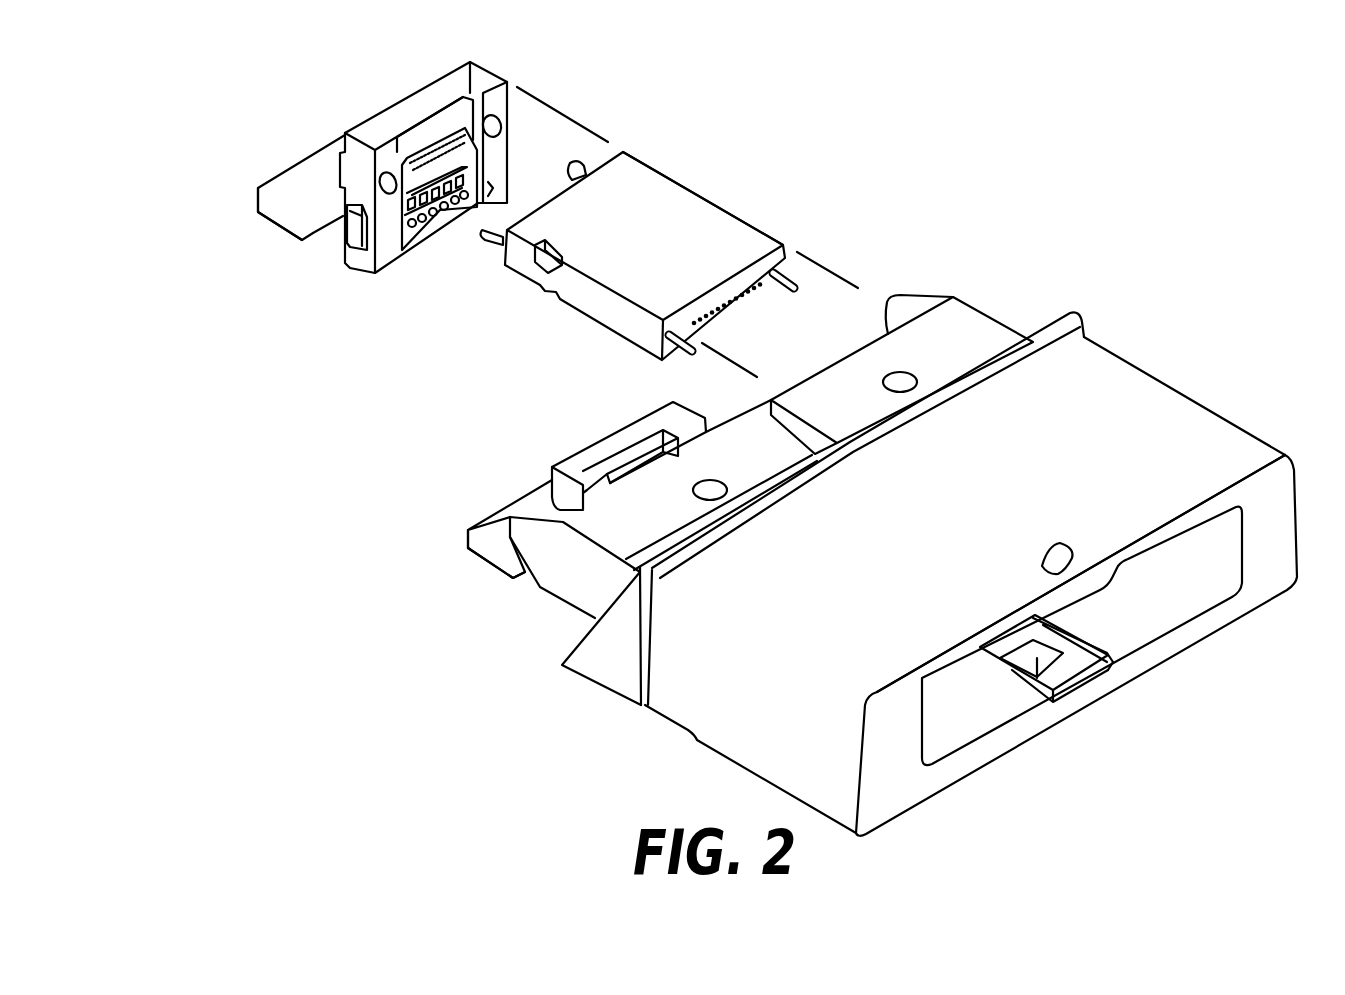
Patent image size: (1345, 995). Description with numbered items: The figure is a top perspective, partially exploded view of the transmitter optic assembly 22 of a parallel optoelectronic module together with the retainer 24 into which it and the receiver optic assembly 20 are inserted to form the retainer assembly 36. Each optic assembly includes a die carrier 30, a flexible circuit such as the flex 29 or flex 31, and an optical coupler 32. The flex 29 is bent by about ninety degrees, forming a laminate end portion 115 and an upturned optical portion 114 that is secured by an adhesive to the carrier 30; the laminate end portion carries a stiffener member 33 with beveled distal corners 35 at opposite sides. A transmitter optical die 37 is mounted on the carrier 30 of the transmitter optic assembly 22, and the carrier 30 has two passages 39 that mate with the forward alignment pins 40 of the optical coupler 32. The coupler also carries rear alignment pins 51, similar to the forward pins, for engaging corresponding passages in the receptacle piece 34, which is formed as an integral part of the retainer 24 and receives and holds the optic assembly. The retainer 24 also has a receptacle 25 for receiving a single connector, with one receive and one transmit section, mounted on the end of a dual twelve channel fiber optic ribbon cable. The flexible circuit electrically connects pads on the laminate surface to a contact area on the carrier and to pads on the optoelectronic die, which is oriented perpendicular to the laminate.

The receiver optic assembly 20 is at (485, 486).
The transmitter optic assembly 22 is at (752, 180).
The retainer 24 is at (934, 532).
The receptacle 25 is at (1148, 600).
The flex 29 is at (248, 188).
The die carrier 30 is at (473, 75).
The flex 31 is at (467, 517).
The optical coupler 32 is at (642, 183).
The stiffener member 33 is at (496, 560).
The receptacle piece 34 is at (964, 354).
The beveled distal corners 35 is at (467, 540).
The retainer assembly 36 is at (1197, 207).
The transmitter optical die 37 is at (427, 148).
The passages 39 is at (383, 176).
The forward alignment pins 40 is at (584, 170).
The rear alignment pins 51 is at (792, 292).
The upturned optical portion 114 is at (393, 233).
The laminate end portion 115 is at (310, 190).